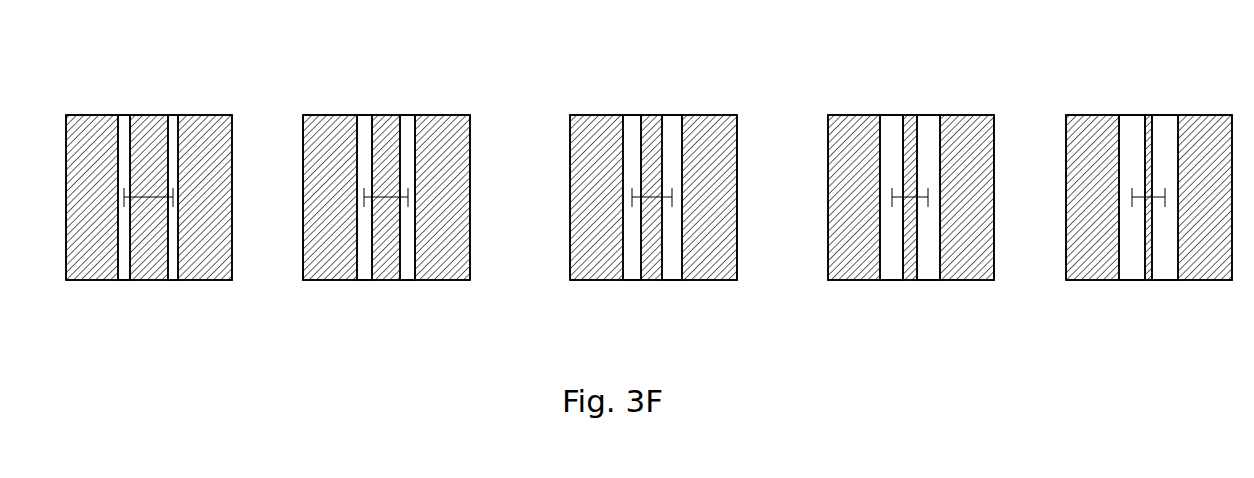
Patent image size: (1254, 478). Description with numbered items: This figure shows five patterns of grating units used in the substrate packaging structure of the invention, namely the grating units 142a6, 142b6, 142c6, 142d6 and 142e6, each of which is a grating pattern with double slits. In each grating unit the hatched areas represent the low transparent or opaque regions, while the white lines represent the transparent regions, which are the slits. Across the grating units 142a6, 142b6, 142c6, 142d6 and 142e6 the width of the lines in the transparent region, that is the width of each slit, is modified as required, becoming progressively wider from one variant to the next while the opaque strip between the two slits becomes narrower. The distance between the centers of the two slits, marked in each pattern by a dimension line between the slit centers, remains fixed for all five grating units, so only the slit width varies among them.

The grating unit 142a6 is at (149, 177).
The grating unit 142b6 is at (386, 177).
The grating unit 142c6 is at (653, 177).
The grating unit 142d6 is at (911, 177).
The grating unit 142e6 is at (1149, 177).